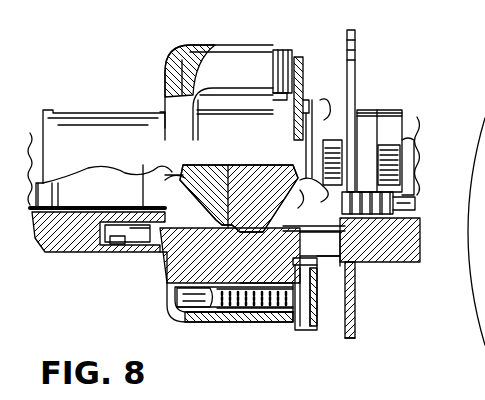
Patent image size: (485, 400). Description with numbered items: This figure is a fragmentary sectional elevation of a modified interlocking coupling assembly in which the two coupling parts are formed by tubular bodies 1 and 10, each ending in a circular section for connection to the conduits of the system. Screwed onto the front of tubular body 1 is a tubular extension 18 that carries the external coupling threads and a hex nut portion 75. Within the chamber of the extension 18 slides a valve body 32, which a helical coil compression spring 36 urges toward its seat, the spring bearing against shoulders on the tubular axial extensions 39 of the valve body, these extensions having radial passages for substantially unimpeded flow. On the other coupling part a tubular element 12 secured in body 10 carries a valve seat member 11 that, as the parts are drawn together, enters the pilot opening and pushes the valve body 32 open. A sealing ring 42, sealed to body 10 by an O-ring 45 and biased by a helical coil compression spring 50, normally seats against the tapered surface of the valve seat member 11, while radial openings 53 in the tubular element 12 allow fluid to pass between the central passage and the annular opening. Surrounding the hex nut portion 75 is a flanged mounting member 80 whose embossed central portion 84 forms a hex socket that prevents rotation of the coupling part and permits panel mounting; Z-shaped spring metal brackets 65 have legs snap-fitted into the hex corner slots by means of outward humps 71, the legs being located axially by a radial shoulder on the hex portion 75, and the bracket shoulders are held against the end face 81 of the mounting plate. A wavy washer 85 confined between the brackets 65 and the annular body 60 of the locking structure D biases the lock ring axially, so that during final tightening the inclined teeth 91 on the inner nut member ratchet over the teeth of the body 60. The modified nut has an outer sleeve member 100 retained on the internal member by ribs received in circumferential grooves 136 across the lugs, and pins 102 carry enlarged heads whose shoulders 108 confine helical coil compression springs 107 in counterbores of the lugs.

The tubular body 1 is at (418, 136).
The tubular body 10 is at (83, 112).
The valve seat member 11 is at (217, 174).
The tubular element 12 is at (75, 180).
The tubular extension 18 is at (168, 258).
The valve body 32 is at (297, 195).
The helical coil compression spring 36 is at (410, 197).
The axial extensions 39 is at (314, 221).
The sealing ring 42 is at (133, 279).
The O-ring 45 is at (122, 250).
The helical coil compression spring 50 is at (90, 207).
The radial openings 53 is at (143, 170).
The annular body 60 is at (320, 322).
The brackets 65 is at (357, 340).
The hump 71 is at (356, 309).
The hex nut portion 75 is at (353, 263).
The mounting member 80 is at (355, 57).
The end face 81 is at (331, 142).
The embossed central portion 84 is at (342, 108).
The wavy washer 85 is at (306, 98).
The inclined teeth 91 is at (264, 312).
The outer sleeve member 100 is at (229, 86).
The pins 102 is at (225, 322).
The helical coil compression springs 107 is at (203, 322).
The shoulders 108 is at (172, 297).
The circumferential grooves 136 is at (282, 326).
The locking structure D is at (320, 327).